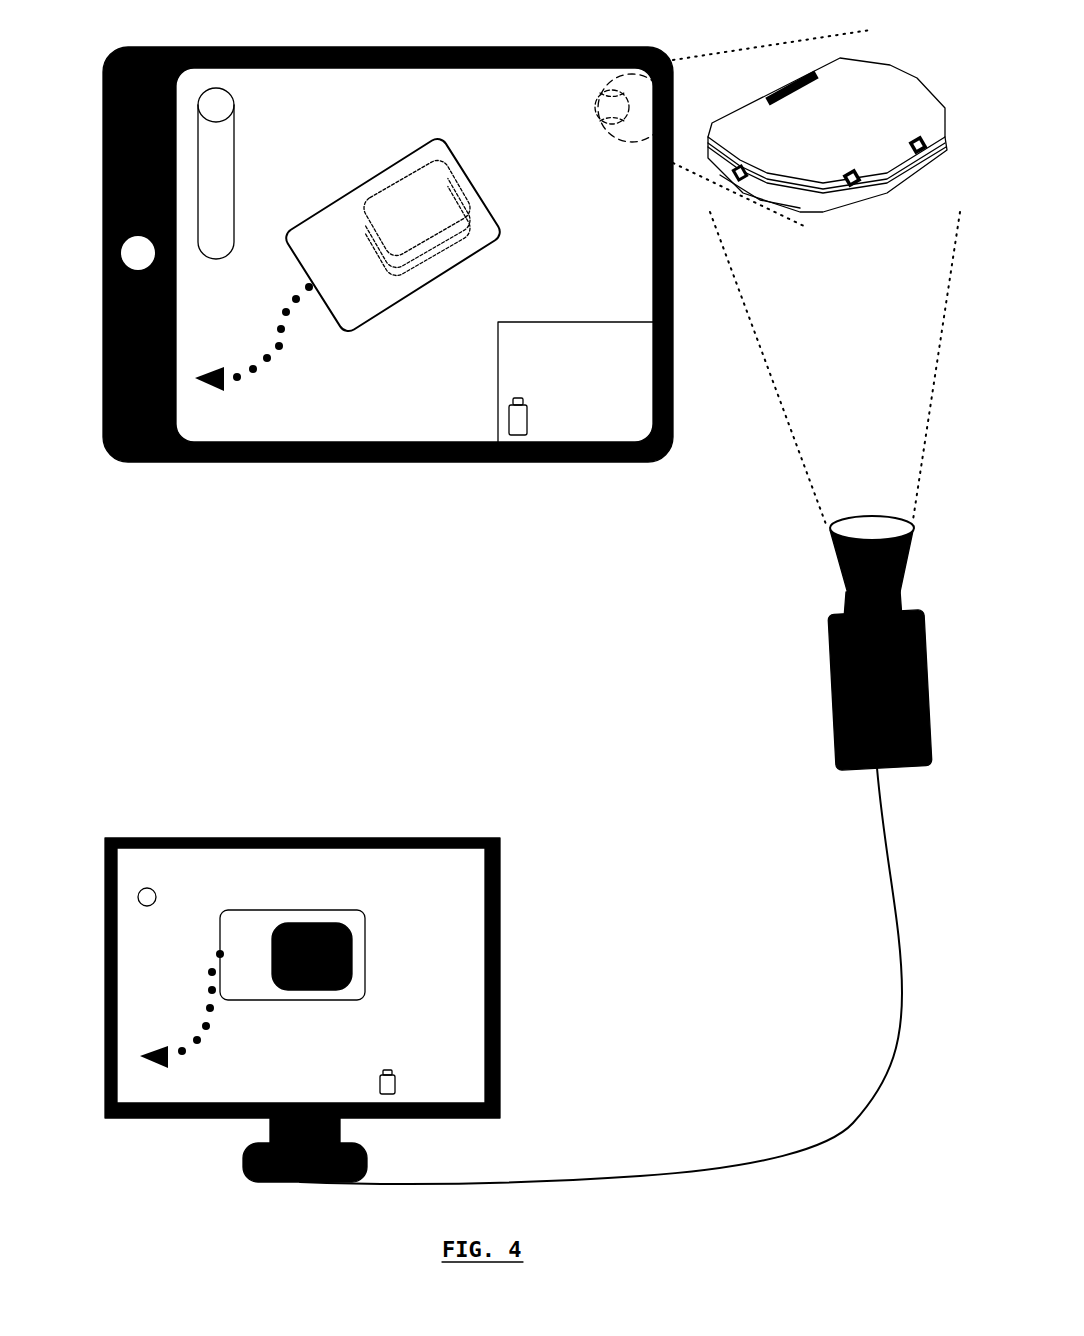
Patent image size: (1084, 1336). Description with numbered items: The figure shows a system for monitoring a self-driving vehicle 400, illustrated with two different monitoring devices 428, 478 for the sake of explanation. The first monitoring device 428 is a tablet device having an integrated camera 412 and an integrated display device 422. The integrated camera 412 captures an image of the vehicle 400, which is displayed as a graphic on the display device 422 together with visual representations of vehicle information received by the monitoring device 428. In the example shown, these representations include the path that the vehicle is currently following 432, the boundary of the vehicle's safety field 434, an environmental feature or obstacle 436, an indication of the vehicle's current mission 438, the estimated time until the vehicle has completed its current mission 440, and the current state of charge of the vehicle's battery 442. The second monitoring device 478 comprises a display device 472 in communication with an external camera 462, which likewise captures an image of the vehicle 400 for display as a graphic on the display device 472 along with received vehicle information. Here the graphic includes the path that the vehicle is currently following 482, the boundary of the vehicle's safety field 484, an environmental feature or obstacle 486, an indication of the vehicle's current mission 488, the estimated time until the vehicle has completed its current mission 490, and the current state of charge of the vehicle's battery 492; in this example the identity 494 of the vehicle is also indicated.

The monitoring device 428 is at (103, 72).
The integrated camera 412 is at (603, 88).
The environmental feature or obstacle 436 is at (236, 148).
The integrated display device 422 is at (393, 109).
The boundary of the vehicle's safety field 434 is at (507, 226).
The path that the vehicle is currently following 432 is at (273, 357).
The indication of the vehicle's current mission 438 is at (637, 348).
The estimated time until the vehicle has completed its current mission 440 is at (637, 370).
The current state of charge of the vehicle's battery 442 is at (572, 420).
The vehicle 400 is at (803, 132).
The external camera 462 is at (827, 697).
The monitoring device 478 is at (105, 872).
The display device 472 is at (319, 930).
The boundary of the vehicle's safety field 484 is at (368, 941).
The path that the vehicle is currently following 482 is at (201, 1036).
The environmental feature or obstacle 486 is at (147, 907).
The identity of the vehicle 494 is at (478, 1012).
The indication of the vehicle's current mission 488 is at (478, 1032).
The estimated time until the vehicle has completed its current mission 490 is at (478, 1052).
The current state of charge of the vehicle's battery 492 is at (430, 1082).